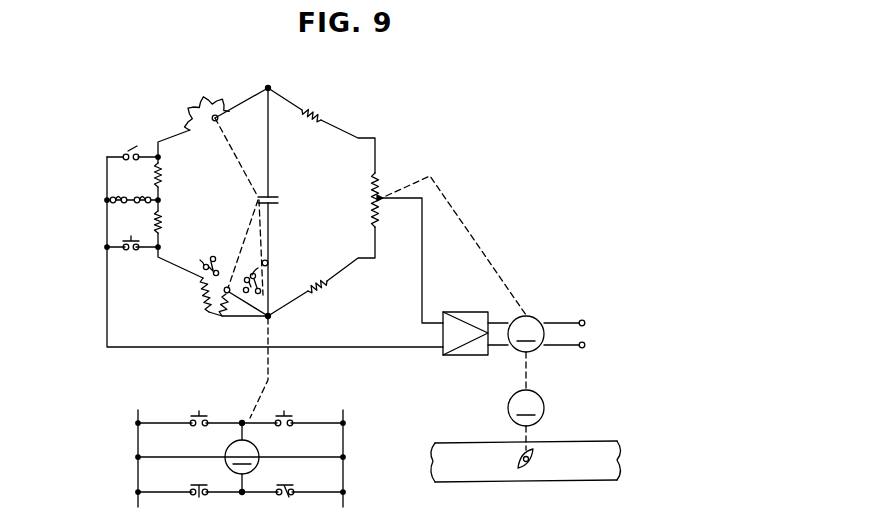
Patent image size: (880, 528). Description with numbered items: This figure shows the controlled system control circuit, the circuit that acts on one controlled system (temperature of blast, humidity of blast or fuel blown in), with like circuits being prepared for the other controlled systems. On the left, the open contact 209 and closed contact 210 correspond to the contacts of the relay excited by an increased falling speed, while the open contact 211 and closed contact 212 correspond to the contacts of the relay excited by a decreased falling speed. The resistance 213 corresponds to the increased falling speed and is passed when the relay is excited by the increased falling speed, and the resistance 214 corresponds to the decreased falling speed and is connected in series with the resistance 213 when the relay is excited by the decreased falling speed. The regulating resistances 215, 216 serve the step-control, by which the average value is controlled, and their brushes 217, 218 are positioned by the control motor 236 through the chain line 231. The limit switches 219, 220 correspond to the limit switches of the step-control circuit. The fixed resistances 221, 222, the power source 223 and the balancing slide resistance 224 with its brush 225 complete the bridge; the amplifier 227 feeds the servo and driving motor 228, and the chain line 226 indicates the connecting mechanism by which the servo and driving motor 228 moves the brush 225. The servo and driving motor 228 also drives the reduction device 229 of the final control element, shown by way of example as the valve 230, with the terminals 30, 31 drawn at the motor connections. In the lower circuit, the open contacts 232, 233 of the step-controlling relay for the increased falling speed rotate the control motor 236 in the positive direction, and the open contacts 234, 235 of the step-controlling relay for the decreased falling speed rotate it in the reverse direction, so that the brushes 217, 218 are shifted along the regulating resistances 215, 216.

The open contact of relay 209 is at (132, 141).
The closed contact of relay 210 is at (132, 188).
The open contact of relay 211 is at (132, 250).
The closed contact of relay 212 is at (133, 218).
The resistance corresponding to increased falling speed 213 is at (163, 176).
The resistance corresponding to decreased falling speed 214 is at (163, 218).
The regulating resistance for step-control 215 is at (215, 92).
The regulating resistance for step-control 216 is at (201, 306).
The brush 217 is at (210, 112).
The brush 218 is at (229, 306).
The limit switch 219 is at (198, 260).
The limit switch 220 is at (251, 247).
The fixed resistance 221 is at (317, 112).
The fixed resistance 222 is at (320, 290).
The power source 223 is at (279, 198).
The balancing slide resistance 224 is at (382, 189).
The brush 225 is at (381, 203).
The chain line indicating connecting mechanism 226 is at (467, 228).
The amplifier 227 is at (471, 356).
The servo and driving motor 228 is at (533, 334).
The reduction device of final control element 229 is at (526, 389).
The valve 230 is at (524, 470).
The chain line connecting control motor with brushes 231 is at (268, 365).
The open contact of step-controlling relay 232 is at (197, 407).
The open contact of step-controlling relay 233 is at (295, 502).
The open contact of step-controlling relay 234 is at (291, 412).
The open contact of step-controlling relay 235 is at (202, 502).
The control motor 236 is at (242, 457).
The terminal 30 is at (566, 323).
The terminal 31 is at (571, 348).